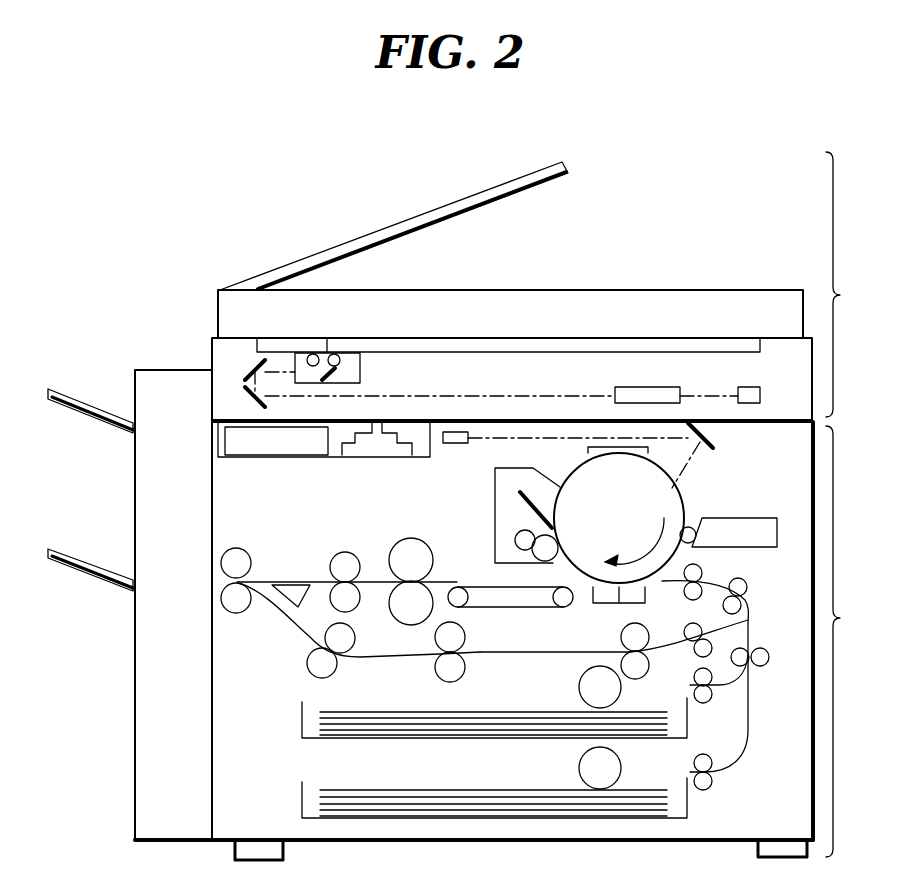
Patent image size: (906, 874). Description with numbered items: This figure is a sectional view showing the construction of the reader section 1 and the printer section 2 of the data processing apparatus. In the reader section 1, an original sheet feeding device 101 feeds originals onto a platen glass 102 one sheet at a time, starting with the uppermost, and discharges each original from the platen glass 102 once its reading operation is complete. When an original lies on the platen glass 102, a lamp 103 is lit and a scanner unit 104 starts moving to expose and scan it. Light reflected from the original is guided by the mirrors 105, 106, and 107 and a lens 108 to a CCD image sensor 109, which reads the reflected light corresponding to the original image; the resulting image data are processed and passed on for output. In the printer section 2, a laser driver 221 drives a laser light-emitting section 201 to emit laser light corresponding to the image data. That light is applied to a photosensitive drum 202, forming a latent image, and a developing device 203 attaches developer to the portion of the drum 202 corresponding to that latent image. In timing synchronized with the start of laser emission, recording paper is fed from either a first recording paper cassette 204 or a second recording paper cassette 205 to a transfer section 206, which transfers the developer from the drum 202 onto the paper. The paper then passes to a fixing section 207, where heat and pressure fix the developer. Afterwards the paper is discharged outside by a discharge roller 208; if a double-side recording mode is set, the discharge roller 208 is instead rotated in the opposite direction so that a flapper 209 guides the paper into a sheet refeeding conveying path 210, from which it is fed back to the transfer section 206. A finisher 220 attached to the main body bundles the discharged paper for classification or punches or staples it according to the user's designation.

The reader section 1 is at (845, 284).
The printer section 2 is at (845, 641).
The original sheet feeding device 101 is at (422, 212).
The platen glass 102 is at (582, 343).
The lamp 103 is at (335, 354).
The scanner unit 104 is at (362, 365).
The mirror 105 is at (338, 371).
The mirror 106 is at (245, 372).
The mirror 107 is at (245, 395).
The lens 108 is at (637, 382).
The CCD image sensor 109 is at (762, 388).
The laser light-emitting section 201 is at (362, 458).
The photosensitive drum 202 is at (682, 475).
The developing device 203 is at (733, 517).
The first recording paper cassette 204 is at (302, 720).
The second recording paper cassette 205 is at (302, 795).
The transfer section 206 is at (603, 605).
The fixing section 207 is at (410, 538).
The discharge roller 208 is at (221, 597).
The flapper 209 is at (282, 600).
The sheet refeeding conveying path 210 is at (407, 655).
The finisher 220 is at (157, 780).
The laser driver 221 is at (218, 444).